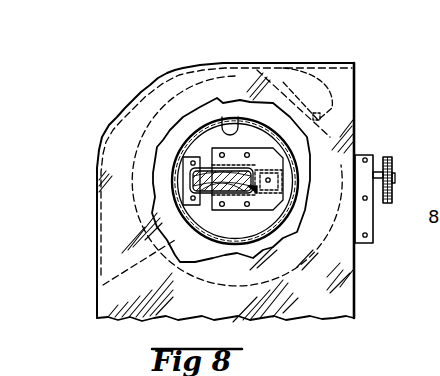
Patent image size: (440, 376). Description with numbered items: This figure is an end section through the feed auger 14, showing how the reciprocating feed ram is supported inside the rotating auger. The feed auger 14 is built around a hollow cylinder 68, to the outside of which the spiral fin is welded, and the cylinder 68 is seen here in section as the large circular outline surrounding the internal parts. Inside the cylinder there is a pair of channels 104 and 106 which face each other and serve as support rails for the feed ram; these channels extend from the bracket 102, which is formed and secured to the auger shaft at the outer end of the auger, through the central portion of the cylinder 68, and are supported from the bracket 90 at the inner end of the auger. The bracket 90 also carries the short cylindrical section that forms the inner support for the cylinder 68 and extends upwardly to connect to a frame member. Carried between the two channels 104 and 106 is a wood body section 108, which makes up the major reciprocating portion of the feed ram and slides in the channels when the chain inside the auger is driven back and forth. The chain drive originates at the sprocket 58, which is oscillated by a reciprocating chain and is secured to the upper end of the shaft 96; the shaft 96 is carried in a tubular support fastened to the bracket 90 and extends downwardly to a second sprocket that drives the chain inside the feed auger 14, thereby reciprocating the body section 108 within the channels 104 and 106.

The feed auger 14 is at (148, 254).
The sprocket 58 is at (387, 192).
The hollow cylinder 68 is at (237, 149).
The bracket 90 is at (357, 243).
The shaft 96 is at (392, 177).
The bracket 102 is at (260, 152).
The channel 104 is at (283, 172).
The channel 106 is at (183, 173).
The wood body section 108 is at (213, 163).